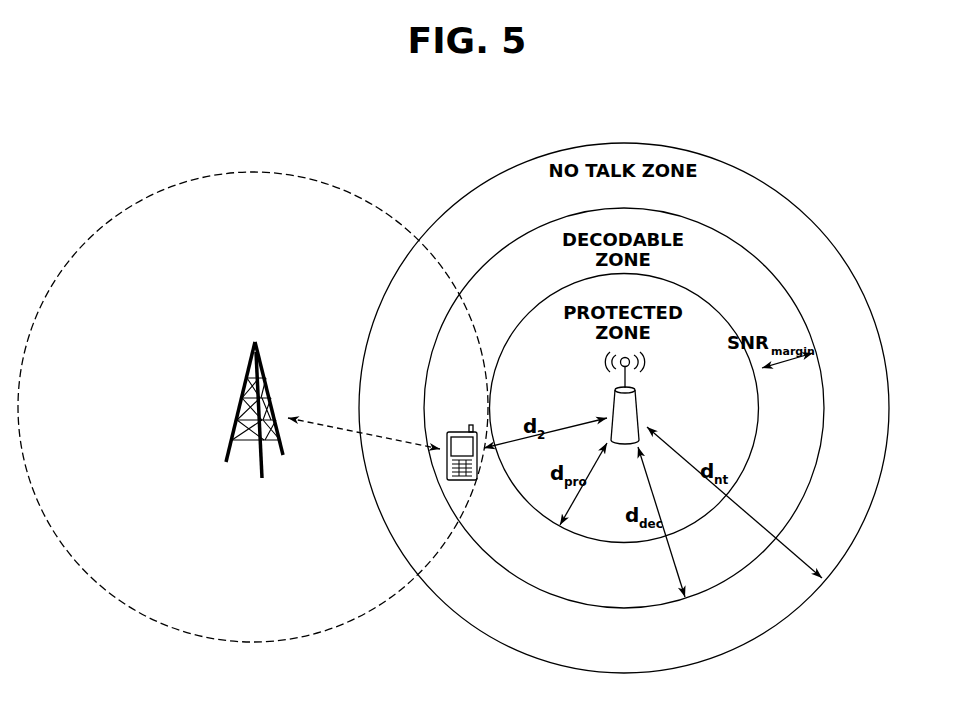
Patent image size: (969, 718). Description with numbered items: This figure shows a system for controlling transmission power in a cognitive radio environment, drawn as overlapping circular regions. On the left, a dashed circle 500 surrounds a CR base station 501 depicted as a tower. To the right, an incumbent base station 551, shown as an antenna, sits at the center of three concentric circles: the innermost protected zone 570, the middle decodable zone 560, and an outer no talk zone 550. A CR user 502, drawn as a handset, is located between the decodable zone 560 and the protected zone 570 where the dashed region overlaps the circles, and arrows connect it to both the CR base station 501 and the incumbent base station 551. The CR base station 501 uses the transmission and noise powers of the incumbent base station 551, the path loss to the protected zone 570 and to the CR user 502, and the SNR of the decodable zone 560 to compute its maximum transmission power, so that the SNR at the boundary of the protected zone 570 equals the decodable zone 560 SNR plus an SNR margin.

The coverage area of primary base station (dashed circle) 500 is at (93, 237).
The CR base station 501 is at (266, 462).
The CR user 502 is at (465, 430).
The no talk zone boundary 550 is at (813, 222).
The incumbent base station 551 is at (637, 412).
The decodable zone 560 is at (790, 295).
The protected zone 570 is at (760, 407).